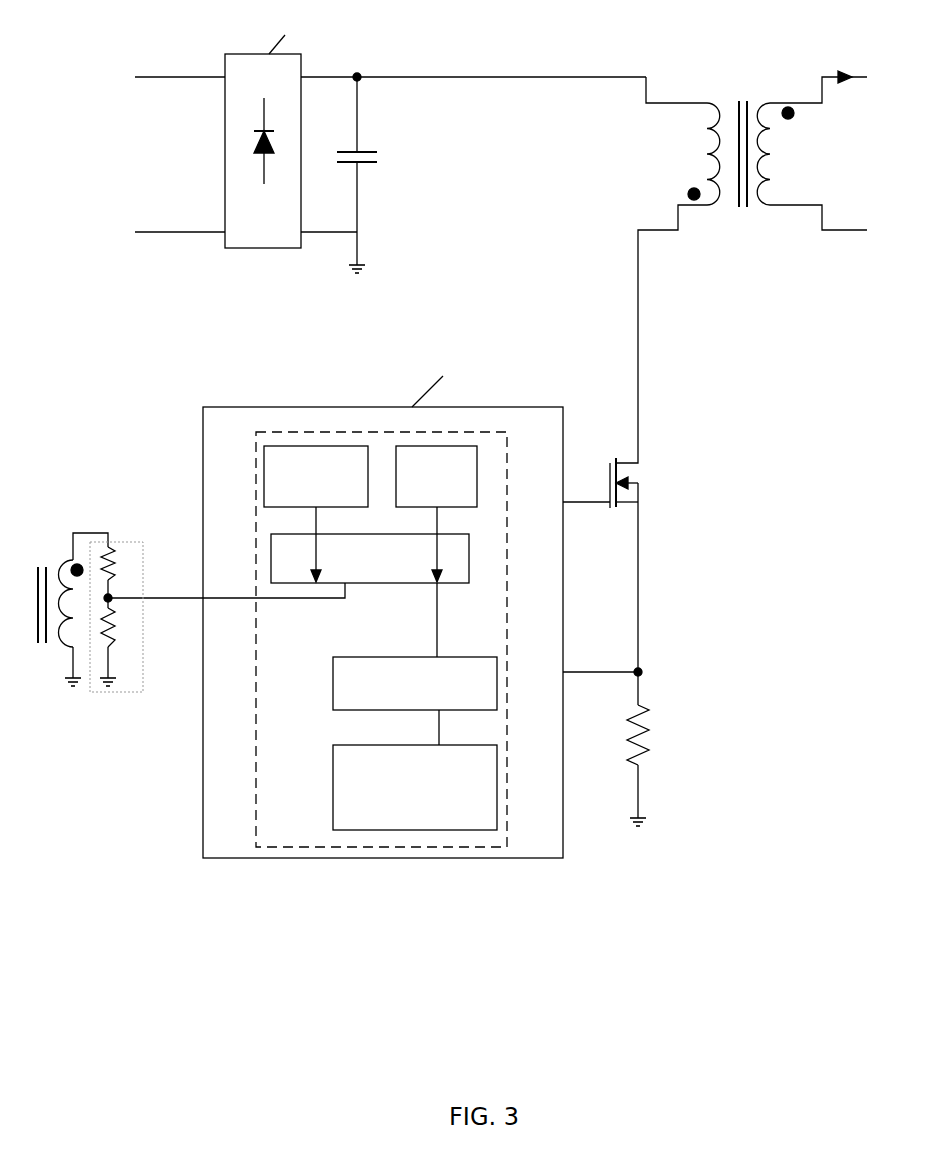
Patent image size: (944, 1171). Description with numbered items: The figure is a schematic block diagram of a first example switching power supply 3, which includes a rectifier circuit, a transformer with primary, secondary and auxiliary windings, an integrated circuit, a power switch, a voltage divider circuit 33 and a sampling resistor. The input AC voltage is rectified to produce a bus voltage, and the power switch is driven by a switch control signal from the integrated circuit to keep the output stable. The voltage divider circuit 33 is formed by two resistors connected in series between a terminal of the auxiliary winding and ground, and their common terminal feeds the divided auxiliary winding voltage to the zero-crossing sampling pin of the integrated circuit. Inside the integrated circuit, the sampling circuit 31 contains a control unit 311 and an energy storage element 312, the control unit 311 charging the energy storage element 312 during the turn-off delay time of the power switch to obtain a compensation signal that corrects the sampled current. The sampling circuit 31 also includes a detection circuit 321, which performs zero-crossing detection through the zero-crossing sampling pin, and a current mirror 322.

The switching power supply 3 is at (696, 338).
The sampling circuit 31 is at (257, 773).
The control unit 311 is at (415, 683).
The energy storage element 312 is at (415, 787).
The detection circuit 321 is at (242, 598).
The current mirror 322 is at (367, 583).
The voltage divider circuit 33 is at (127, 543).